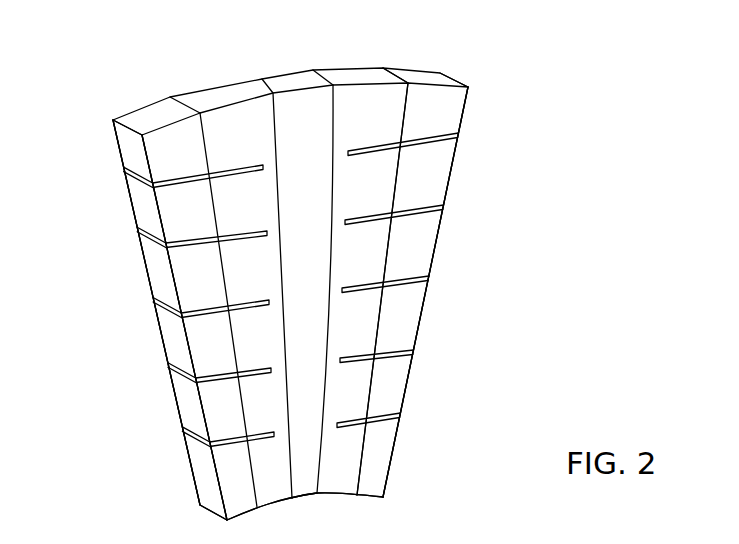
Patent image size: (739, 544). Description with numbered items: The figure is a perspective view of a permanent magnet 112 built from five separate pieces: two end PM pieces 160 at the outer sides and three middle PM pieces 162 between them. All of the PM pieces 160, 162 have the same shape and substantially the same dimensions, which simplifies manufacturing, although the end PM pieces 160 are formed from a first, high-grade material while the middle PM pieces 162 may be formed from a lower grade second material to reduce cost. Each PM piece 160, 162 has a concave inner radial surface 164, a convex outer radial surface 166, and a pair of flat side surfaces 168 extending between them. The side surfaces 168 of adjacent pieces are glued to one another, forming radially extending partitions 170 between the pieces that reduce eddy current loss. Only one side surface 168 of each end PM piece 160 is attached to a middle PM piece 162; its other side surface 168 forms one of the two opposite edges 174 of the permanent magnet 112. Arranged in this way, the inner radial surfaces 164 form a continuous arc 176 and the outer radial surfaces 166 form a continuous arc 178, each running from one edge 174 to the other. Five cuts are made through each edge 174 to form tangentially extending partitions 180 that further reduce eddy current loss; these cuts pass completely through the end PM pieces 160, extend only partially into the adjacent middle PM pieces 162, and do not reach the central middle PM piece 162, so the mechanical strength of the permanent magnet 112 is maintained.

The permanent magnet 112 is at (518, 132).
The end permanent magnet piece 160 is at (183, 212).
The middle permanent magnet piece 162 is at (240, 267).
The inner radial surface 164 is at (311, 514).
The outer radial surface 166 is at (287, 83).
The side surface 168 is at (245, 88).
The partition 170 is at (408, 106).
The edge 174 is at (170, 318).
The continuous arc 176 is at (347, 496).
The continuous arc 178 is at (313, 70).
The partition 180 is at (232, 424).